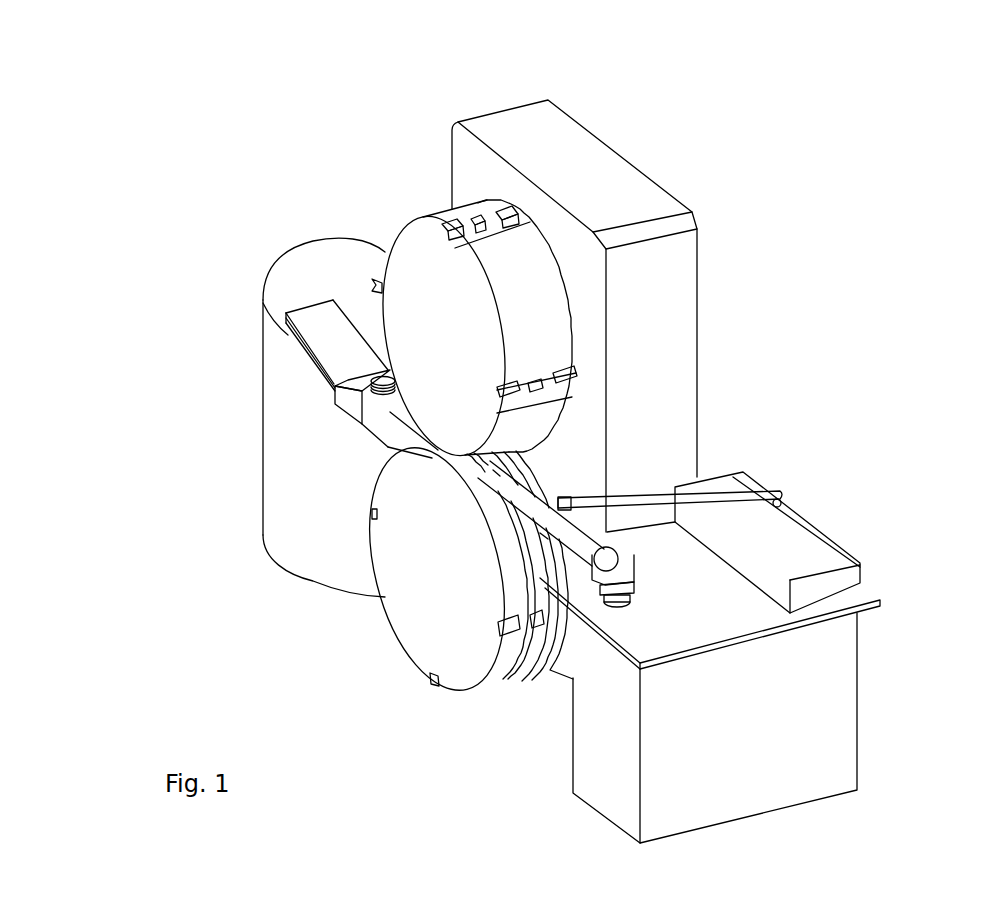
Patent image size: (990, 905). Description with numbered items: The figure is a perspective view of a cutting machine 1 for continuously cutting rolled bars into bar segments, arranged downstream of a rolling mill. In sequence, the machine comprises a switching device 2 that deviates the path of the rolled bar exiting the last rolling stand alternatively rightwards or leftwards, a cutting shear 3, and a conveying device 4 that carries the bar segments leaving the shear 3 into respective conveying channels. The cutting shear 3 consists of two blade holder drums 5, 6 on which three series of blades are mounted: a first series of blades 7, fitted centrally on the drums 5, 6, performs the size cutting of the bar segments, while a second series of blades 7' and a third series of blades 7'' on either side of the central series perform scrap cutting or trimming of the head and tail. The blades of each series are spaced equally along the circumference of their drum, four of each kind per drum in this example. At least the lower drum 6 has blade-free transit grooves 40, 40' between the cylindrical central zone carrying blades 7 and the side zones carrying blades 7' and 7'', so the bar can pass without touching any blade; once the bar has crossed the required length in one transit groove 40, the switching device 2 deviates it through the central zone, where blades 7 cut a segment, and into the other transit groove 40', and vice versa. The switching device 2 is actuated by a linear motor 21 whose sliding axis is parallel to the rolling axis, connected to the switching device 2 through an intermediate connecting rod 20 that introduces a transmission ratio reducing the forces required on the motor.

The cutting machine 1 is at (858, 294).
The switching device 2 is at (591, 484).
The cutting shear 3 is at (521, 257).
The conveying device 4 is at (376, 428).
The blade holder drum 5 is at (403, 273).
The lower drum 6 is at (397, 562).
The blades 7 is at (579, 414).
The blades 7' is at (331, 449).
The blades 7'' is at (648, 210).
The intermediate connecting rod 20 is at (712, 497).
The linear motor 21 is at (800, 518).
The transit groove 40 is at (420, 608).
The transit groove 40' is at (321, 536).